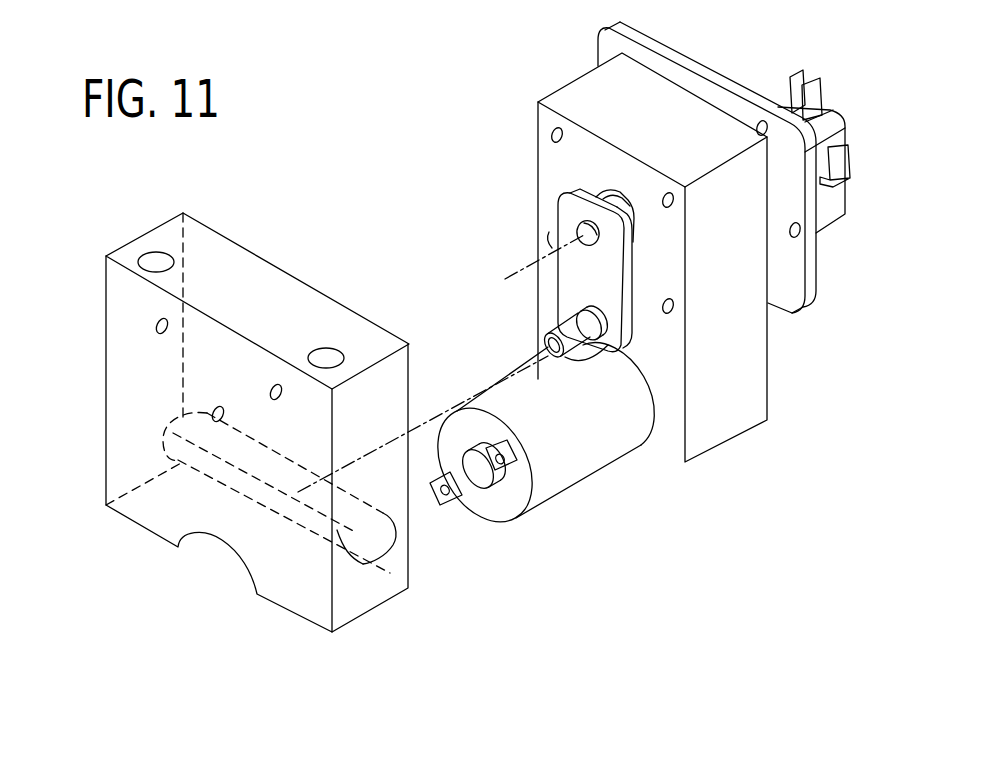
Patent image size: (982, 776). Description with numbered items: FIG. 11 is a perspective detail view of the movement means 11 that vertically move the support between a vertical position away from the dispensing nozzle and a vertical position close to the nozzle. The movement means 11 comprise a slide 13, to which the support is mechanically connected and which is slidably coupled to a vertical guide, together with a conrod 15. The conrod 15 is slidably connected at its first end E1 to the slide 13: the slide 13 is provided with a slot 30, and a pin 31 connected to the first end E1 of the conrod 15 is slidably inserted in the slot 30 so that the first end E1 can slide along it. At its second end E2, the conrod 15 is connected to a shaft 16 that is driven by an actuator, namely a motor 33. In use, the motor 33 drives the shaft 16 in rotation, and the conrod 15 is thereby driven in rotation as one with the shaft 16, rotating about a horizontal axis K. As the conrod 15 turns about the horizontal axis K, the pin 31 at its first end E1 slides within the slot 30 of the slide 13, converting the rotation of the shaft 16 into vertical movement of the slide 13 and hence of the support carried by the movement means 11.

The movement means 11 is at (546, 327).
The slide 13 is at (297, 266).
The conrod 15 is at (646, 284).
The shaft 16 is at (568, 232).
The horizontal axis K is at (527, 267).
The slot 30 is at (249, 509).
The pin 31 is at (580, 366).
The actuator (motor) 33 is at (566, 503).
The first end of the conrod E1 is at (605, 182).
The second end of the conrod E2 is at (612, 358).